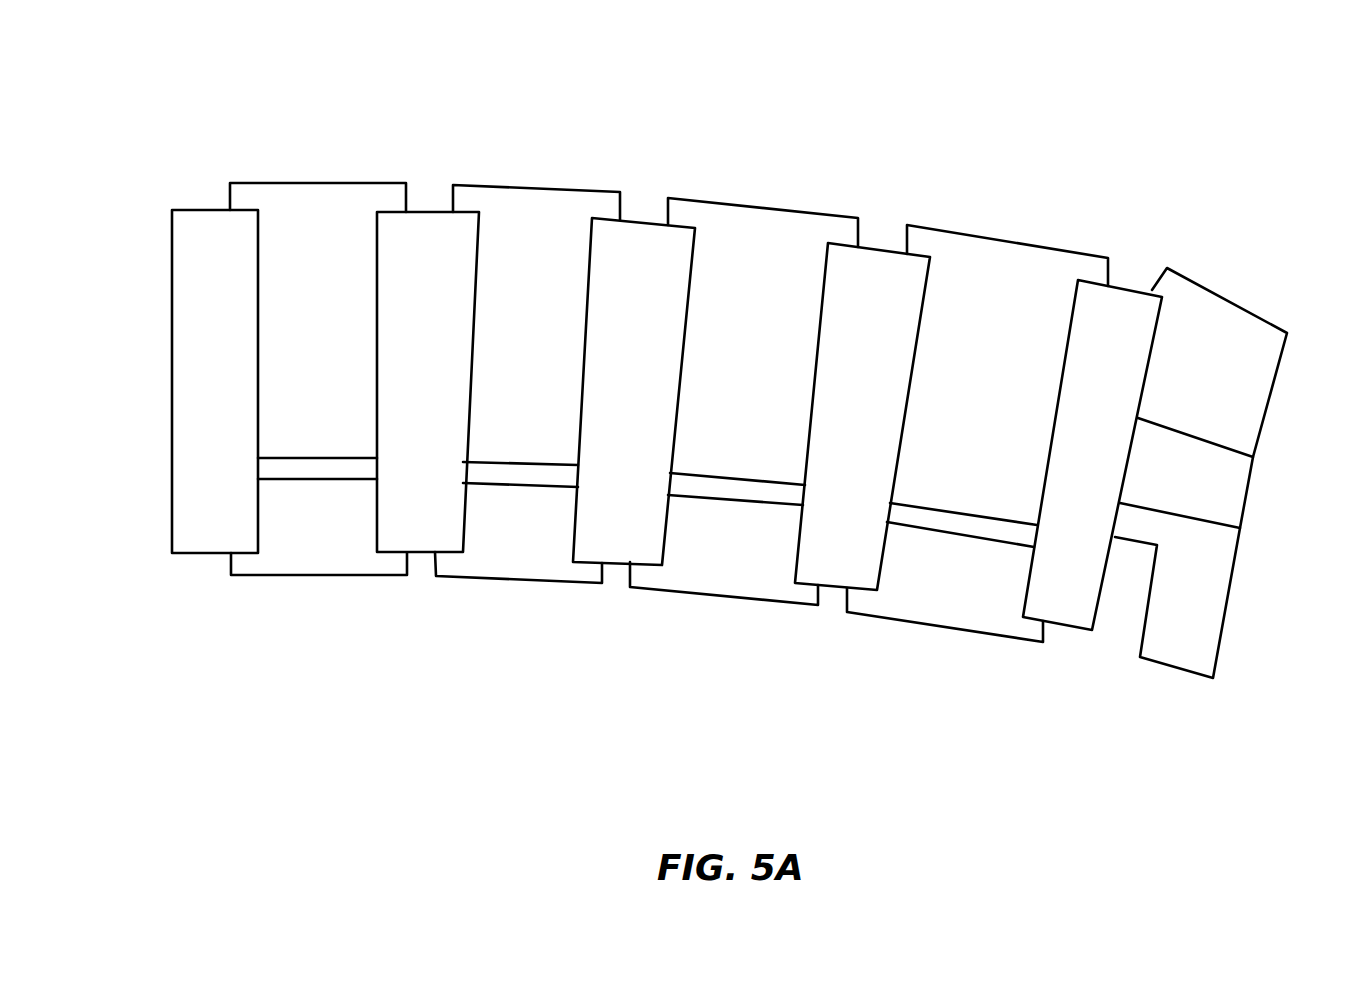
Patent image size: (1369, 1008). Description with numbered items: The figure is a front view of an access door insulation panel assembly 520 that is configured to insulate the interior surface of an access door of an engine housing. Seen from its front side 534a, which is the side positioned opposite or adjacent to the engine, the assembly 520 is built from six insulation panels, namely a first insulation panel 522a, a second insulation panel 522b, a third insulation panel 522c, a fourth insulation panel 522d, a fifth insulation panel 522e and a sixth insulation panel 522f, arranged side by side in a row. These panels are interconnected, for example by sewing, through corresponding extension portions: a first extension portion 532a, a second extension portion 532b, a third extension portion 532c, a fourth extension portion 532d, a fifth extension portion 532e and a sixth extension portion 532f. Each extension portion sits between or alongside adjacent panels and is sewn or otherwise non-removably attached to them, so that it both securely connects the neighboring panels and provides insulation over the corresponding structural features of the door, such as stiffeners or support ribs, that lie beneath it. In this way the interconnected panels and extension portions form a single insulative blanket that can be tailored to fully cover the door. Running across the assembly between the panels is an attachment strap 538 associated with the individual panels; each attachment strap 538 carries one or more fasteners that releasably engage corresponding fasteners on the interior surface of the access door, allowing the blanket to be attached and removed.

The access door insulation panel assembly 520 is at (233, 130).
The first insulation panel 522a is at (317, 215).
The second insulation panel 522b is at (538, 228).
The third insulation panel 522c is at (765, 242).
The fourth insulation panel 522d is at (997, 278).
The fifth insulation panel 522e is at (1205, 320).
The sixth insulation panel 522f is at (1197, 613).
The first extension portion 532a is at (207, 532).
The second extension portion 532b is at (427, 527).
The third extension portion 532c is at (622, 517).
The fourth extension portion 532d is at (840, 553).
The fifth extension portion 532e is at (1062, 593).
The sixth extension portion 532f is at (1222, 499).
The front side 534a is at (748, 347).
The attachment strap 538 is at (318, 470).